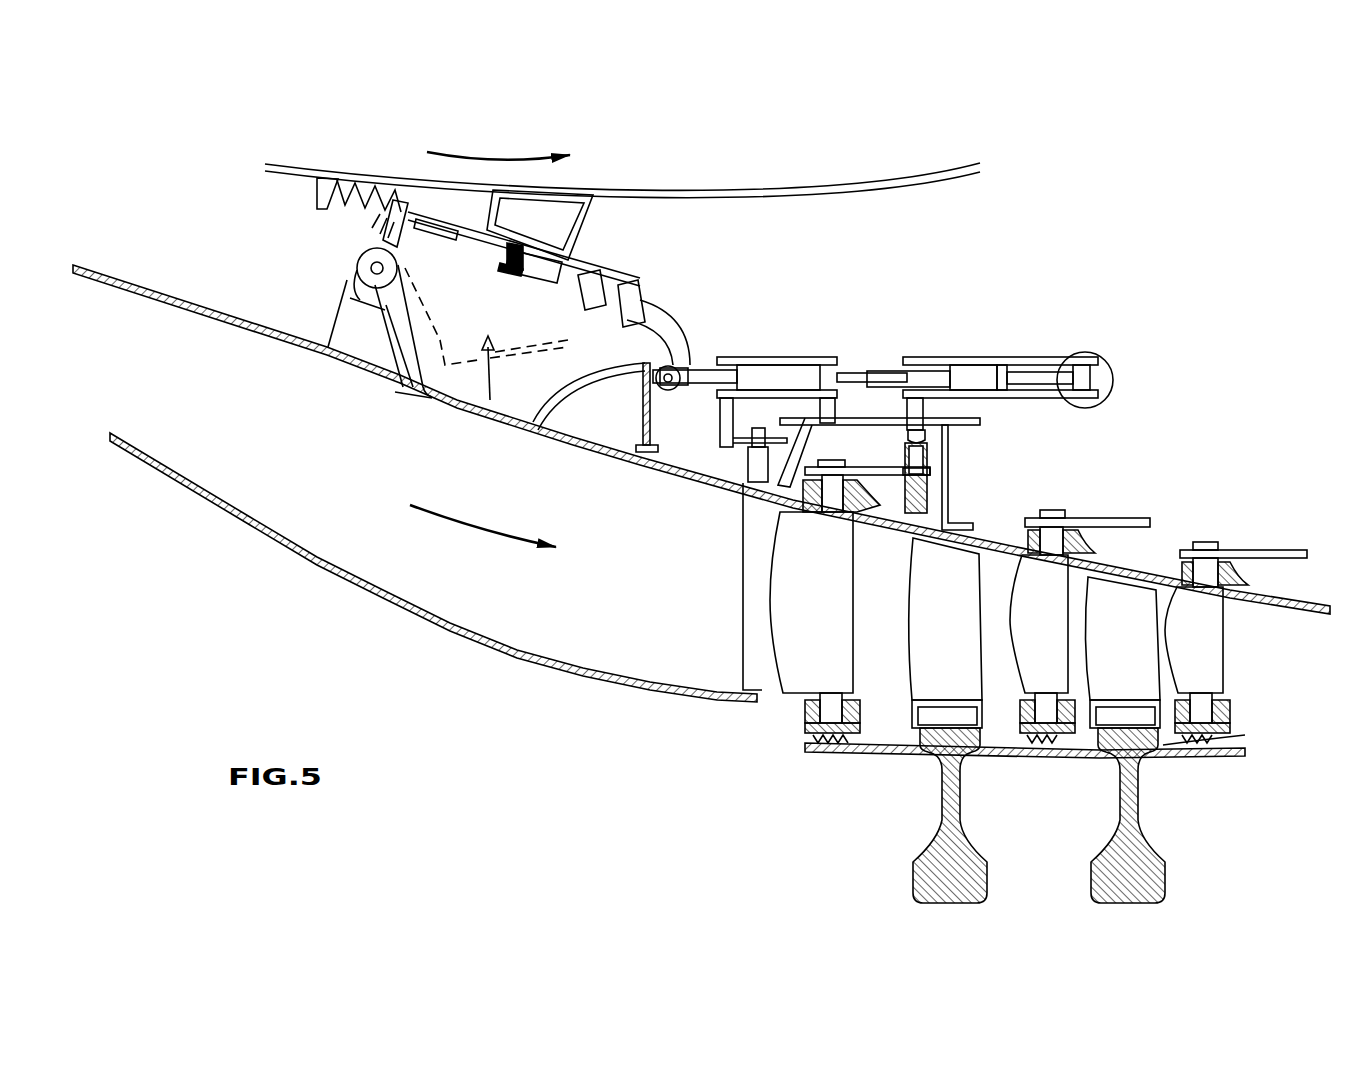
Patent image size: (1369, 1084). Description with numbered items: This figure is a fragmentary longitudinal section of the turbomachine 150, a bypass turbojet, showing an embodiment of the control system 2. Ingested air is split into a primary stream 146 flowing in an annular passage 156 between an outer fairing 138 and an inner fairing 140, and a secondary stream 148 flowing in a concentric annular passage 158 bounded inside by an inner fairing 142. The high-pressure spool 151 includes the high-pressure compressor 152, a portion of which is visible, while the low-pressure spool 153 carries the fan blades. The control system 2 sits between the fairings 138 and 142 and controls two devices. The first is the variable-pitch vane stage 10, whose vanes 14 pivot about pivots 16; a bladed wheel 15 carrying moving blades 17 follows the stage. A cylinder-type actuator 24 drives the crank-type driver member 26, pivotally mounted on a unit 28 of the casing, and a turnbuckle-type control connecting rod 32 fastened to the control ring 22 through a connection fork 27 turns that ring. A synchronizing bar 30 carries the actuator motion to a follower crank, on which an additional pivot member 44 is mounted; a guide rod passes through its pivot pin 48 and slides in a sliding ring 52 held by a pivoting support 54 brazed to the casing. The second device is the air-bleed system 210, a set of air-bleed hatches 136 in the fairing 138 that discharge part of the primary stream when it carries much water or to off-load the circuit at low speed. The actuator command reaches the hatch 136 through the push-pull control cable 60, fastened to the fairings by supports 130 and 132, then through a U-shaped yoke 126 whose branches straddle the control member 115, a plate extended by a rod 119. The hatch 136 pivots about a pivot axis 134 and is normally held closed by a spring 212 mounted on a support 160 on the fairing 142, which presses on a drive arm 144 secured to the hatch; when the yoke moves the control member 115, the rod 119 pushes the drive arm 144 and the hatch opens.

The control system 2 is at (1040, 346).
The variable-pitch vane stage 10 is at (790, 705).
The vanes 14 is at (798, 627).
The bladed wheel 15 is at (905, 880).
The pivot 16 is at (833, 508).
The moving blades 17 is at (935, 651).
The control ring 22 is at (900, 503).
The cylinder-type actuator 24 is at (1110, 378).
The crank-type driver member 26 is at (940, 358).
The connection fork 27 is at (927, 460).
The unit of the turbomachine casing 28 is at (1015, 428).
The synchronizing bar 30 is at (880, 370).
The control connecting rod 32 is at (920, 408).
The additional pivot member 44 is at (690, 363).
The pivot pin 48 is at (722, 418).
The sliding ring 52 is at (758, 438).
The pivoting support 54 is at (750, 463).
The control cable 60 is at (654, 322).
The control member 115 is at (487, 250).
The rod 119 is at (420, 218).
The U-shaped yoke 126 is at (517, 283).
The support 130 is at (582, 238).
The support 132 is at (645, 412).
The pivot axis 134 is at (374, 260).
The air-bleed hatch 136 is at (492, 420).
The outer fairing 138 is at (220, 334).
The inner fairing 140 is at (268, 516).
The inner fairing 142 is at (858, 176).
The drive arm 144 is at (402, 200).
The primary stream 146 is at (492, 536).
The secondary stream 148 is at (492, 156).
The turbomachine 150 is at (585, 715).
The high-pressure spool 151 is at (830, 796).
The high-pressure compressor 152 is at (910, 790).
The low-pressure spool 153 is at (465, 650).
The annular passage 156 is at (625, 626).
The annular passage 158 is at (655, 144).
The support 160 is at (322, 192).
The air-bleed system 210 is at (422, 340).
The spring 212 is at (360, 184).